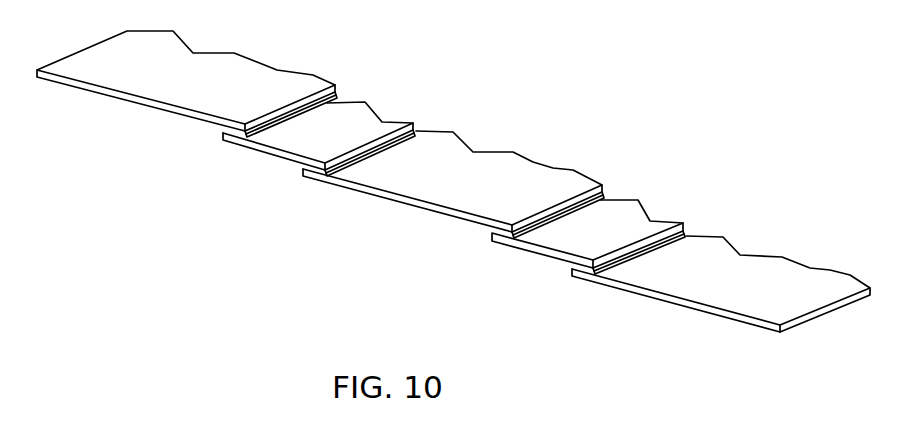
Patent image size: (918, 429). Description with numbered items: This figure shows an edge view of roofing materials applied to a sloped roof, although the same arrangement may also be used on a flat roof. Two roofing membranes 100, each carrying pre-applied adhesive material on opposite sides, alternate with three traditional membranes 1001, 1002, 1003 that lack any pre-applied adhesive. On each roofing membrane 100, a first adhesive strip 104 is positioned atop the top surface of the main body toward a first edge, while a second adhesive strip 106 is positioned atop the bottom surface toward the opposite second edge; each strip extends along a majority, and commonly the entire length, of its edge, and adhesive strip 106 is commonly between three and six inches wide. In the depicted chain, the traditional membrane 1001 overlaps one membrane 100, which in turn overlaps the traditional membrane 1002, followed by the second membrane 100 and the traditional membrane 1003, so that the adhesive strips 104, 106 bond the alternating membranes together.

The roofing membrane 100 is at (277, 152).
The adhesive strip 104 is at (222, 133).
The adhesive strip 106 is at (347, 160).
The traditional membrane 1001 is at (102, 95).
The traditional membrane 1002 is at (403, 203).
The traditional membrane 1003 is at (724, 318).